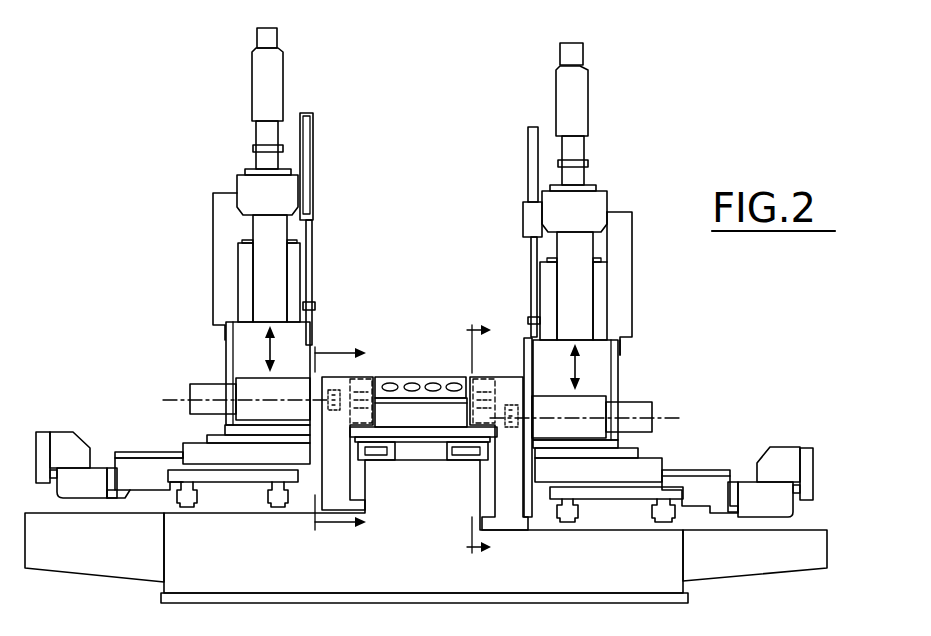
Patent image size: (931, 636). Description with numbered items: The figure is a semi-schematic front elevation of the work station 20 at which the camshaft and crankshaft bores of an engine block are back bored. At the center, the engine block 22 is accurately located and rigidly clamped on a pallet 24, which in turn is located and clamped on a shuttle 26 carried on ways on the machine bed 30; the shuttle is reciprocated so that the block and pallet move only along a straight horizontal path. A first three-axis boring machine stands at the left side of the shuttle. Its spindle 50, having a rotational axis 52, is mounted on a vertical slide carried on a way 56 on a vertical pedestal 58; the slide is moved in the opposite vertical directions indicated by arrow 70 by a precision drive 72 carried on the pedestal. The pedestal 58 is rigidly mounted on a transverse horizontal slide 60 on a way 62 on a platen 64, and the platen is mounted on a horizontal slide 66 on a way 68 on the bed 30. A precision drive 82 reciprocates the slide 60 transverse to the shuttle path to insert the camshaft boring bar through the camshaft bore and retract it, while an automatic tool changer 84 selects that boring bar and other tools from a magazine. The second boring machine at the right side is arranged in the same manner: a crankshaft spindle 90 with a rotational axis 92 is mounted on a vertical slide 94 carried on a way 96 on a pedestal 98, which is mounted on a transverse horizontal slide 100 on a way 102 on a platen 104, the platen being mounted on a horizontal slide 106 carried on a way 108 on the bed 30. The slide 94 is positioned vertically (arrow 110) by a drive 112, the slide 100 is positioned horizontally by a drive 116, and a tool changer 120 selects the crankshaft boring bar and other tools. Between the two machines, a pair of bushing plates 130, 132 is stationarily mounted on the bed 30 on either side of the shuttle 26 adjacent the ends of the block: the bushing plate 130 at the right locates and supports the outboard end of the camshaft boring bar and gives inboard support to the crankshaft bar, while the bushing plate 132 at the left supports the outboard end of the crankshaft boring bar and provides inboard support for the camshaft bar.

The work station 20 is at (414, 128).
The engine block 22 is at (388, 377).
The pallet 24 is at (441, 437).
The shuttle 26 is at (417, 452).
The machine bed 30 is at (440, 560).
The spindle 50 is at (248, 387).
The rotational axis 52 is at (177, 400).
The way 56 is at (262, 230).
The vertical pedestal 58 is at (222, 202).
The transverse horizontal slide 60 is at (193, 443).
The way 62 is at (129, 452).
The platen 64 is at (131, 484).
The horizontal slide 66 is at (213, 488).
The way 68 is at (262, 502).
The arrow 70 is at (288, 352).
The precision drive 72 is at (302, 171).
The precision drive 82 is at (36, 438).
The automatic tool changer 84 is at (316, 330).
The crankshaft spindle 90 is at (650, 400).
The rotational axis 92 is at (667, 418).
The vertical slide 94 is at (596, 354).
The way 96 is at (600, 268).
The pedestal 98 is at (620, 209).
The transverse horizontal slide 100 is at (648, 462).
The way 102 is at (722, 468).
The platen 104 is at (709, 500).
The horizontal slide 106 is at (600, 498).
The way 108 is at (641, 516).
The arrow 110 is at (587, 357).
The drive 112 is at (607, 197).
The drive 116 is at (789, 447).
The tool changer 120 is at (526, 335).
The bushing plate 130 is at (492, 377).
The bushing plate 132 is at (348, 377).